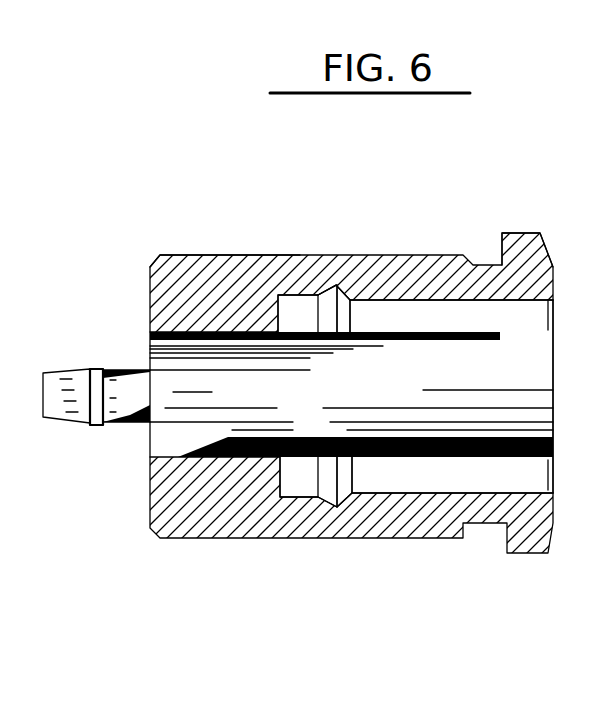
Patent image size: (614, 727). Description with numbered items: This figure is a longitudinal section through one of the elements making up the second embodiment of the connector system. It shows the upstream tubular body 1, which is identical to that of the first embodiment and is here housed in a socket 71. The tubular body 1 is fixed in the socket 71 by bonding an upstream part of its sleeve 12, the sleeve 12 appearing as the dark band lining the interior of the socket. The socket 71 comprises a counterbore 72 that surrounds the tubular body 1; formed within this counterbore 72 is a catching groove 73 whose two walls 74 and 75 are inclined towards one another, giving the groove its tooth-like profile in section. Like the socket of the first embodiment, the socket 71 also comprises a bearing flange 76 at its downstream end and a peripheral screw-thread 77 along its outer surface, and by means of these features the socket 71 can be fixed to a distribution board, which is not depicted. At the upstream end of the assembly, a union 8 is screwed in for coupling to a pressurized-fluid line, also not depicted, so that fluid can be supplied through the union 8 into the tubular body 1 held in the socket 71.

The upstream tubular body 1 is at (146, 444).
The union 8 is at (84, 369).
The sleeve 12 is at (193, 443).
The socket 71 is at (549, 229).
The counterbore 72 is at (522, 313).
The catching groove 73 is at (323, 303).
The wall 74 is at (337, 285).
The wall 75 is at (363, 260).
The bearing flange 76 is at (500, 232).
The peripheral screw-thread 77 is at (177, 259).